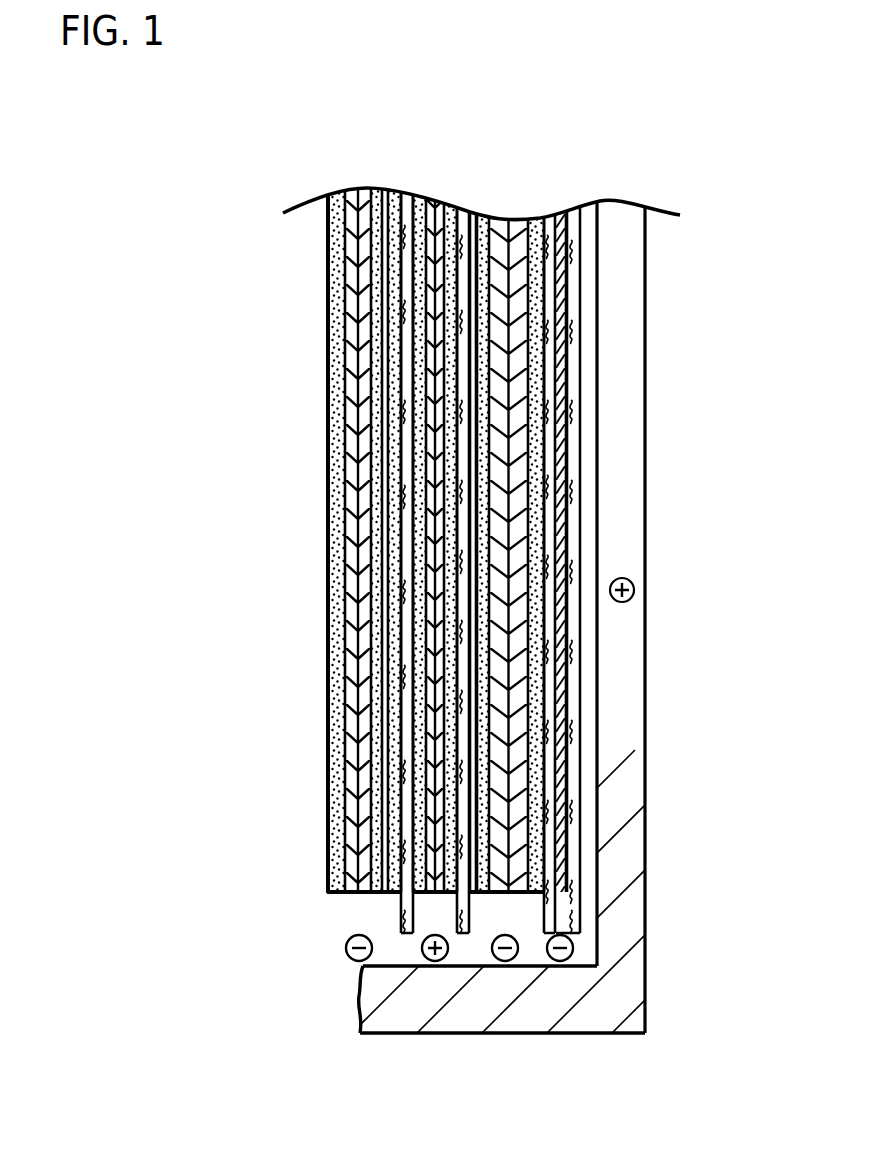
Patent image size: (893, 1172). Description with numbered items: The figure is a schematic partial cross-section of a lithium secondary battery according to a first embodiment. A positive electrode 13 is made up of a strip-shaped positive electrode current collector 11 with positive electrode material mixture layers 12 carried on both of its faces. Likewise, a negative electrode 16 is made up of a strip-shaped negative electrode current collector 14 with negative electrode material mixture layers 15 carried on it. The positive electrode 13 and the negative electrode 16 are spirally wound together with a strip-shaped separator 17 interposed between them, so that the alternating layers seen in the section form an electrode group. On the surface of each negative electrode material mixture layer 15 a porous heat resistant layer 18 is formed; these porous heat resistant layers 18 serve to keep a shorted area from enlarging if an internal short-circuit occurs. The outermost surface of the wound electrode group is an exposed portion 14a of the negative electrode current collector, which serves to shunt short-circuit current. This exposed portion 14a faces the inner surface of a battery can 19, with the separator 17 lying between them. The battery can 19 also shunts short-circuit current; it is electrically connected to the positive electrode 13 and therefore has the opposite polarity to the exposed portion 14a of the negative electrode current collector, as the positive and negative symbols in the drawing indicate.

The positive electrode current collector 11 is at (433, 208).
The positive electrode material mixture layer 12 is at (418, 207).
The positive electrode 13 is at (433, 480).
The negative electrode current collector 14 is at (358, 617).
The exposed portion of the negative electrode current collector 14a is at (560, 846).
The negative electrode material mixture layer 15 is at (342, 578).
The negative electrode 16 is at (299, 536).
The separator 17 is at (573, 783).
The porous heat resistant layer 18 is at (383, 852).
The battery can 19 is at (623, 523).